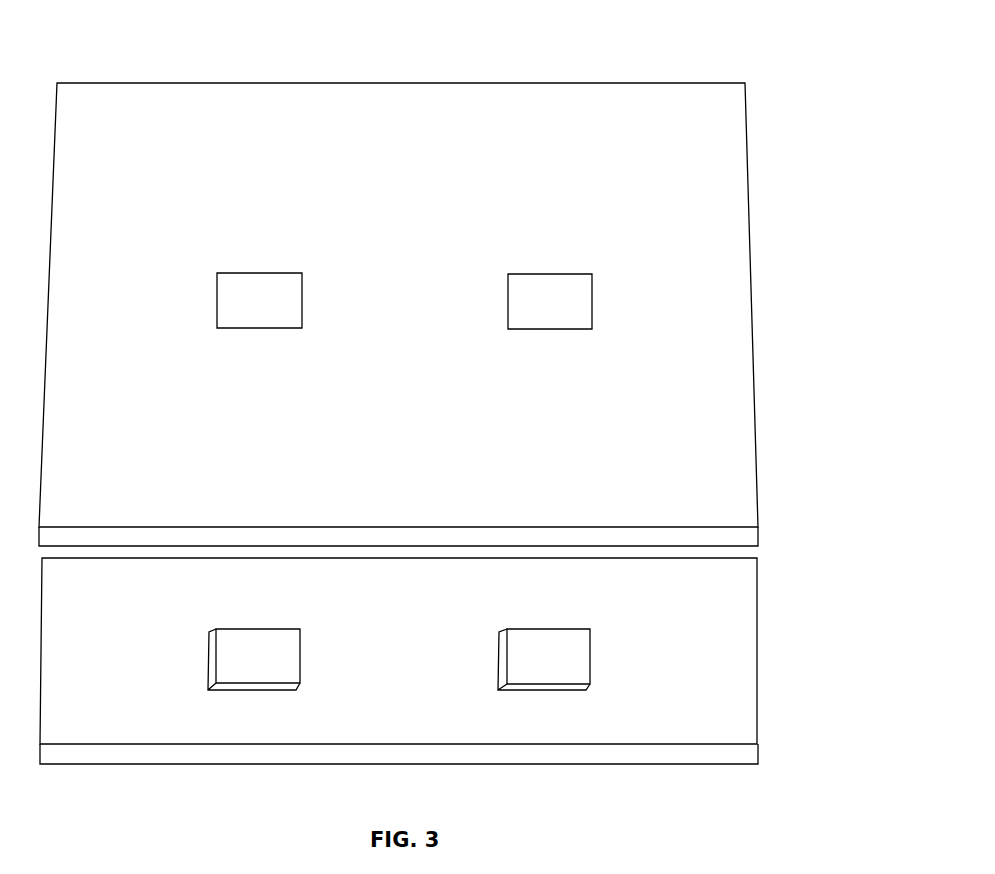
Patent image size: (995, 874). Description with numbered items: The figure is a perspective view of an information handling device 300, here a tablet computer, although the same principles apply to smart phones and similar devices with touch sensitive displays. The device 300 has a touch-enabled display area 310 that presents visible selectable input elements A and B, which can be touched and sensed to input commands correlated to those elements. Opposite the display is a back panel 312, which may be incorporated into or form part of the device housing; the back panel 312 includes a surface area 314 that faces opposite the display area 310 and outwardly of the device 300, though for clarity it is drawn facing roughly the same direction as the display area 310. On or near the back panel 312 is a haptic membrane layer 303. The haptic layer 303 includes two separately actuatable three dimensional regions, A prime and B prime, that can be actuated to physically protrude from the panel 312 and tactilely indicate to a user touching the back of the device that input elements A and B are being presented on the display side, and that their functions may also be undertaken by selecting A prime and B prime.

The information handling device 300 is at (696, 75).
The touch-enabled display area 310 is at (728, 205).
The back panel 312 is at (743, 535).
The surface area 314 is at (80, 587).
The haptic layer 303 is at (595, 733).